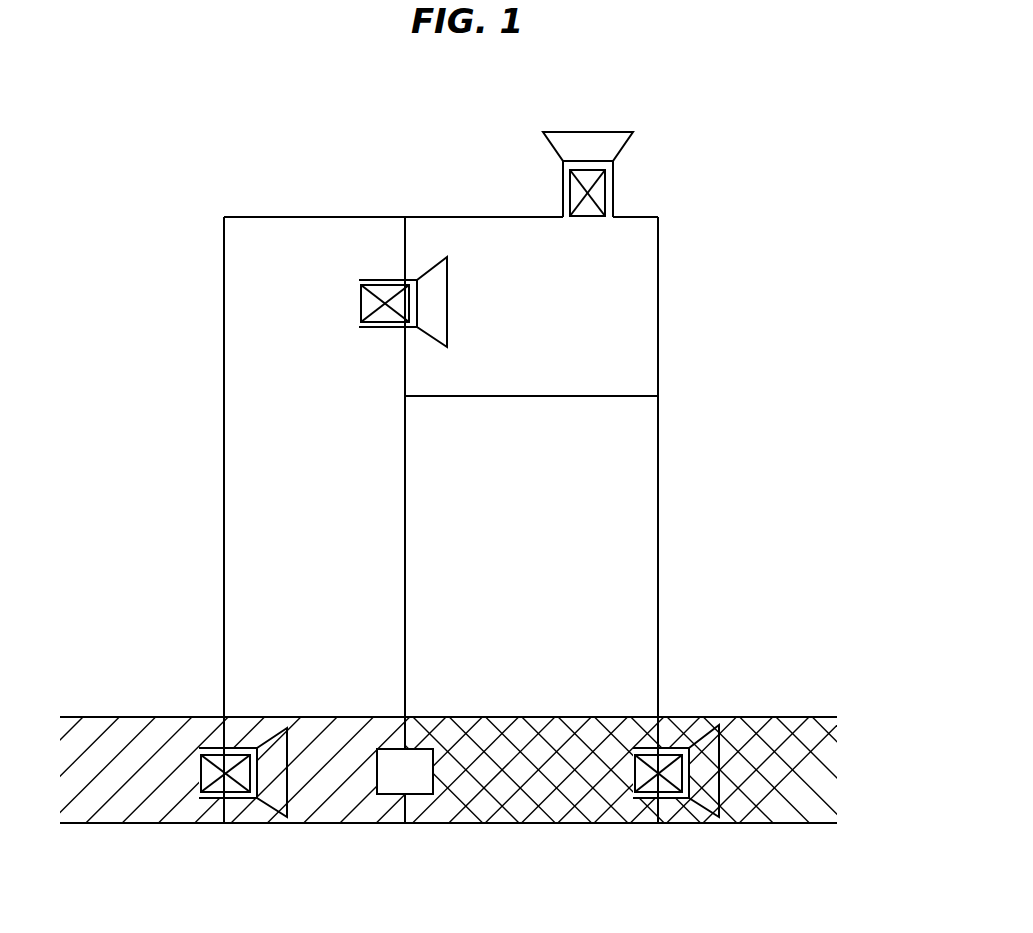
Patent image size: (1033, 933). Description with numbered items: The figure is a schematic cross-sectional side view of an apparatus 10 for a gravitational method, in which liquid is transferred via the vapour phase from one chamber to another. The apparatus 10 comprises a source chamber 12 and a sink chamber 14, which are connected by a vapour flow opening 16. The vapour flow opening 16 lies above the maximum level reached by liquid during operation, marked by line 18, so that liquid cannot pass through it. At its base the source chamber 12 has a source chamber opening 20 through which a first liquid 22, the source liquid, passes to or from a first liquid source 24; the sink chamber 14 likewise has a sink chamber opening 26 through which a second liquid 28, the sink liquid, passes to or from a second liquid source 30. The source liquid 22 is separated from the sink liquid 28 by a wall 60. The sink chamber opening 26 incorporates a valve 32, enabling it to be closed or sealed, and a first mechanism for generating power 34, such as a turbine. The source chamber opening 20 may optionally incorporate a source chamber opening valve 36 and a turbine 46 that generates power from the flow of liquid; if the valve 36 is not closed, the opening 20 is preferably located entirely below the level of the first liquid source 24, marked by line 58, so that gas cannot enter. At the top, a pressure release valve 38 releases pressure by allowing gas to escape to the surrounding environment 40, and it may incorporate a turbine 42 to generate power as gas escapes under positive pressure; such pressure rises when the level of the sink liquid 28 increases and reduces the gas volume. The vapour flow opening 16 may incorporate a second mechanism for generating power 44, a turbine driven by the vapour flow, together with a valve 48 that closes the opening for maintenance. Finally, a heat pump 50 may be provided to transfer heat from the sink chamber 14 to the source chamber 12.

The apparatus 10 is at (679, 187).
The source chamber 12 is at (248, 436).
The sink chamber 14 is at (648, 329).
The vapour flow opening 16 is at (393, 338).
The line 18 is at (573, 397).
The source chamber opening 20 is at (244, 812).
The first liquid 22 is at (328, 813).
The first liquid source 24 is at (79, 823).
The sink chamber opening 26 is at (677, 813).
The second liquid 28 is at (472, 813).
The second liquid source 30 is at (790, 795).
The valve 32 is at (642, 787).
The first mechanism for generating power 34 is at (708, 747).
The source chamber opening valve 36 is at (215, 787).
The pressure release valve 38 is at (583, 219).
The surrounding environment 40 is at (356, 96).
The turbine 42 is at (587, 145).
The second mechanism for generating power 44 is at (435, 303).
The turbine 46 is at (277, 747).
The valve 48 is at (359, 300).
The heat pump 50 is at (388, 797).
The line 58 is at (77, 716).
The wall 60 is at (405, 640).